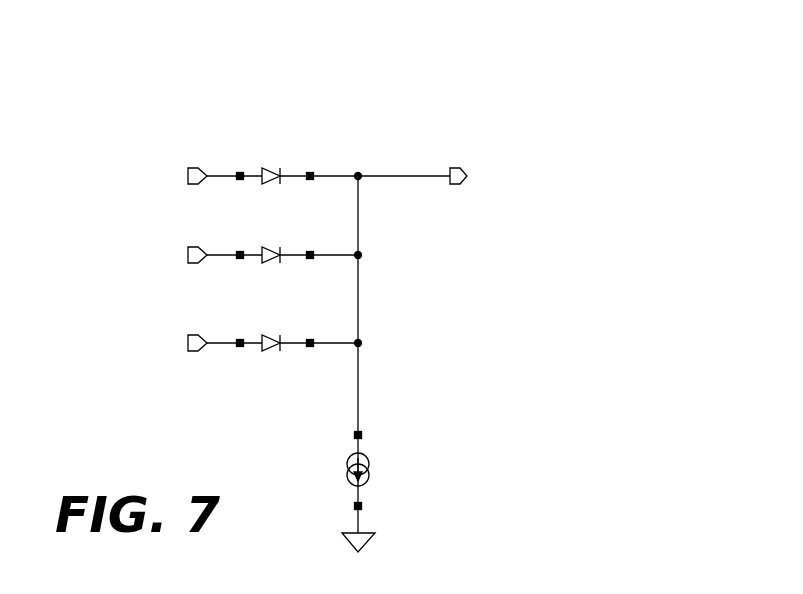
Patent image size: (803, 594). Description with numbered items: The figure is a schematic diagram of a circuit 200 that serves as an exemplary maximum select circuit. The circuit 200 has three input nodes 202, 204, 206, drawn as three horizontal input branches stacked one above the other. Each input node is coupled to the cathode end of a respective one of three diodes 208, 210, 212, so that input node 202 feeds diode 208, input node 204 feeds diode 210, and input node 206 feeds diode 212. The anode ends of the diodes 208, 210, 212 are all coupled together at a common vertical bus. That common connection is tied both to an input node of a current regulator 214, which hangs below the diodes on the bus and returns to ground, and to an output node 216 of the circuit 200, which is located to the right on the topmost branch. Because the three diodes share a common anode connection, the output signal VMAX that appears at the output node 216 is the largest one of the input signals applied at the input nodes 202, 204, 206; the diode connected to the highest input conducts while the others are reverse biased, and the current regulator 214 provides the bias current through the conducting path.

The circuit 200 is at (346, 80).
The input node 202 is at (195, 165).
The input node 204 is at (195, 244).
The input node 206 is at (195, 332).
The diode 208 is at (268, 162).
The diode 210 is at (268, 241).
The diode 212 is at (268, 330).
The current regulator 214 is at (368, 469).
The output node 216 is at (457, 185).